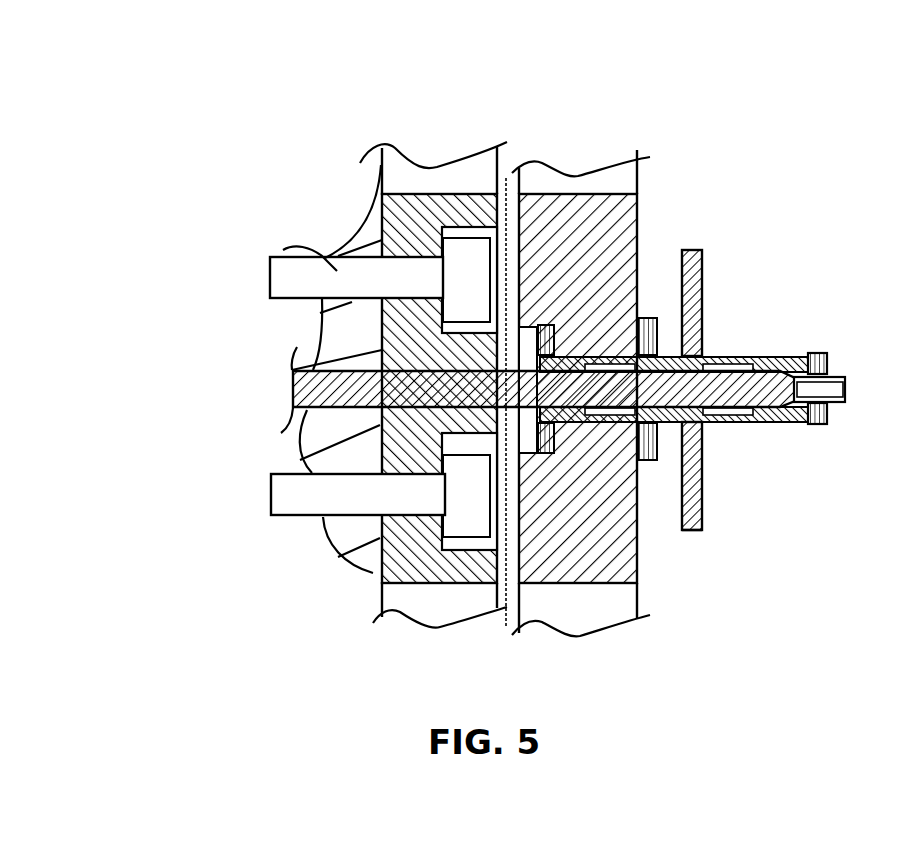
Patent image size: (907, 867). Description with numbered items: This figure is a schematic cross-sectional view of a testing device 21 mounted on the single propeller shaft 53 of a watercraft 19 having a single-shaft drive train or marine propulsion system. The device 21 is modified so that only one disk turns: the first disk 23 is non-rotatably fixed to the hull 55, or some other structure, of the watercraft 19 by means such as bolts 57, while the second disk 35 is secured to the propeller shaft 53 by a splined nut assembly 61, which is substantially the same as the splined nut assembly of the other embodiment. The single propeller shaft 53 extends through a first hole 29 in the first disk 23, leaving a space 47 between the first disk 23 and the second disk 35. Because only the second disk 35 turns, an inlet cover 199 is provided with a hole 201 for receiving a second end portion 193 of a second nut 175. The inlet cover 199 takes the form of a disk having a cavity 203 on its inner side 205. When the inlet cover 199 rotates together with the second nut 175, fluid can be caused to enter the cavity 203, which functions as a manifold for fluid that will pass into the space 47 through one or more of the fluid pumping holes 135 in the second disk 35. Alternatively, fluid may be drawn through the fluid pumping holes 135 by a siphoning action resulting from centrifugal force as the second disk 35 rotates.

The device 21 is at (543, 76).
The first disk 23 is at (447, 194).
The space 47 is at (506, 180).
The second disk 35 is at (567, 194).
The fluid pumping holes 135 is at (609, 186).
The bolts 57 is at (325, 258).
The watercraft 19 is at (359, 236).
The inner side 205 is at (681, 283).
The second end portion 193 is at (738, 356).
The second nut 175 is at (788, 356).
The first hole 29 is at (380, 362).
The single propeller shaft 53 is at (293, 396).
The hole 201 is at (697, 422).
The splined nut assembly 61 is at (794, 443).
The hull 55 is at (338, 536).
The cavity 203 is at (661, 507).
The inlet cover 199 is at (692, 533).